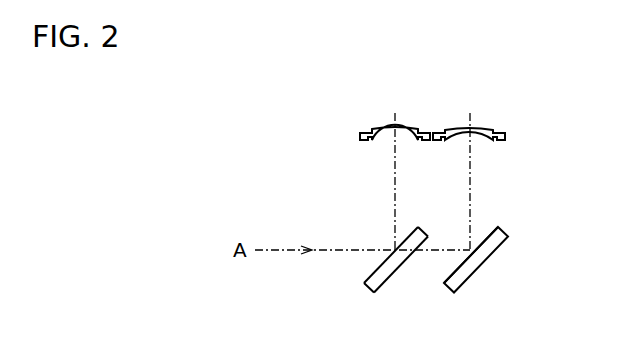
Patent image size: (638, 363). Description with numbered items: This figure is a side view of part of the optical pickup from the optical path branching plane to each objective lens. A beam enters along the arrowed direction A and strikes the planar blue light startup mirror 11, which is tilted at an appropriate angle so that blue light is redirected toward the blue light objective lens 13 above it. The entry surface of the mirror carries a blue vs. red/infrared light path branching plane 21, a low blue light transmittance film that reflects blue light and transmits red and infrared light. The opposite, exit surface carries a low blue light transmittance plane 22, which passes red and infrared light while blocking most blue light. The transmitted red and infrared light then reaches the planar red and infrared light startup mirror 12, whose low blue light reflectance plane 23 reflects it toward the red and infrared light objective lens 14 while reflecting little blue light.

The blue light startup mirror 11 is at (386, 263).
The red and infrared light startup mirror 12 is at (489, 259).
The blue light objective lens 13 is at (380, 134).
The red and infrared light objective lens 14 is at (463, 133).
The blue vs. red/infrared light path branching plane 21 is at (410, 227).
The low blue light transmittance plane 22 is at (388, 277).
The low blue light reflectance plane 23 is at (496, 226).